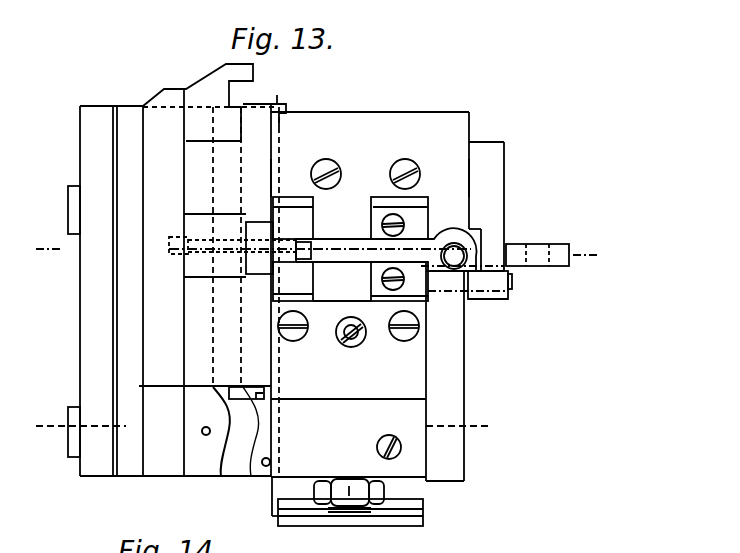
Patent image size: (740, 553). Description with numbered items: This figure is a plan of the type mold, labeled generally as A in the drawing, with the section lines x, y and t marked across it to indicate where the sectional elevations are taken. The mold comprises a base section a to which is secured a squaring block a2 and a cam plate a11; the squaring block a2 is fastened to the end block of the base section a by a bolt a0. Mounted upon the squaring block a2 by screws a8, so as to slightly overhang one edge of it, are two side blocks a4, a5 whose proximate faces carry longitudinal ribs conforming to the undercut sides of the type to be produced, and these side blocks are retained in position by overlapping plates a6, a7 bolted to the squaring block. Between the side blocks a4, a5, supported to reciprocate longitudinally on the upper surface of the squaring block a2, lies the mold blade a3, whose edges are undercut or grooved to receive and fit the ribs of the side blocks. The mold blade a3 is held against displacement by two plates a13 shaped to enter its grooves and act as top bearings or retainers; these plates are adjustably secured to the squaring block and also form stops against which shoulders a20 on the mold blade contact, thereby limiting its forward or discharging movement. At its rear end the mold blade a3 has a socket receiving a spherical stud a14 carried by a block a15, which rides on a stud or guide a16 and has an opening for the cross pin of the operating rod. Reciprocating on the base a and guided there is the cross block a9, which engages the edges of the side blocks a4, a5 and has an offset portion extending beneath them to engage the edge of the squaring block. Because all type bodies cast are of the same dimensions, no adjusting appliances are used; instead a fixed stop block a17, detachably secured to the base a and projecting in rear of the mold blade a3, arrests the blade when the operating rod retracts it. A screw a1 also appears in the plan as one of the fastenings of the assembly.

The tool head A is at (166, 97).
The base section a is at (105, 291).
The bolt a0 is at (347, 499).
The adjusting screw a1 is at (358, 253).
The squaring block a2 is at (385, 305).
The mold blade a3 is at (403, 253).
The side block a4 is at (300, 228).
The side block a5 is at (297, 268).
The overlapping plate a6 is at (384, 133).
The overlapping plate a7 is at (407, 370).
The screws a8 is at (333, 160).
The cross block a9 is at (248, 388).
The cam plate a11 is at (238, 455).
The plates a13 is at (418, 218).
The spherical stud a14 is at (463, 232).
The block a15 is at (488, 302).
The stud or guide a16 is at (510, 293).
The stop block a17 is at (502, 263).
The shoulders a20 is at (452, 254).
The section line t— t is at (333, 298).
The section line x— x is at (50, 267).
The section line y— y is at (260, 434).